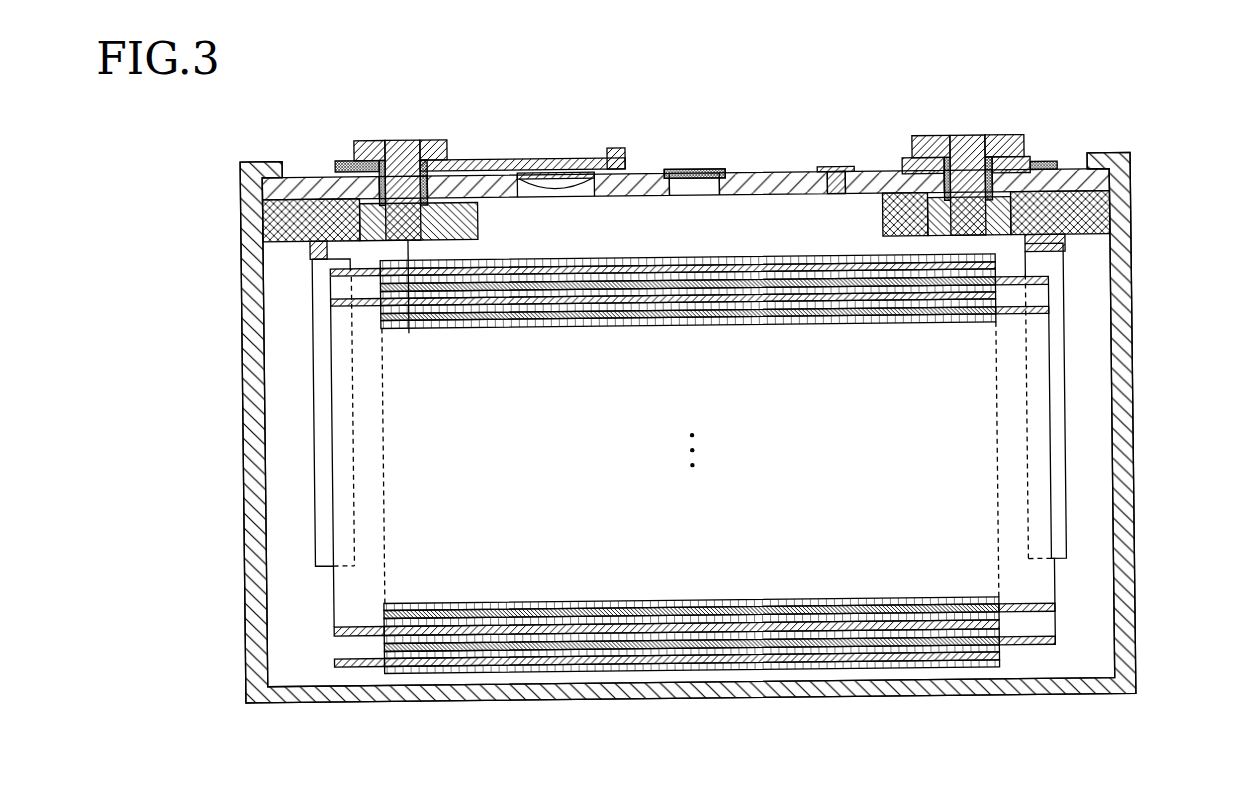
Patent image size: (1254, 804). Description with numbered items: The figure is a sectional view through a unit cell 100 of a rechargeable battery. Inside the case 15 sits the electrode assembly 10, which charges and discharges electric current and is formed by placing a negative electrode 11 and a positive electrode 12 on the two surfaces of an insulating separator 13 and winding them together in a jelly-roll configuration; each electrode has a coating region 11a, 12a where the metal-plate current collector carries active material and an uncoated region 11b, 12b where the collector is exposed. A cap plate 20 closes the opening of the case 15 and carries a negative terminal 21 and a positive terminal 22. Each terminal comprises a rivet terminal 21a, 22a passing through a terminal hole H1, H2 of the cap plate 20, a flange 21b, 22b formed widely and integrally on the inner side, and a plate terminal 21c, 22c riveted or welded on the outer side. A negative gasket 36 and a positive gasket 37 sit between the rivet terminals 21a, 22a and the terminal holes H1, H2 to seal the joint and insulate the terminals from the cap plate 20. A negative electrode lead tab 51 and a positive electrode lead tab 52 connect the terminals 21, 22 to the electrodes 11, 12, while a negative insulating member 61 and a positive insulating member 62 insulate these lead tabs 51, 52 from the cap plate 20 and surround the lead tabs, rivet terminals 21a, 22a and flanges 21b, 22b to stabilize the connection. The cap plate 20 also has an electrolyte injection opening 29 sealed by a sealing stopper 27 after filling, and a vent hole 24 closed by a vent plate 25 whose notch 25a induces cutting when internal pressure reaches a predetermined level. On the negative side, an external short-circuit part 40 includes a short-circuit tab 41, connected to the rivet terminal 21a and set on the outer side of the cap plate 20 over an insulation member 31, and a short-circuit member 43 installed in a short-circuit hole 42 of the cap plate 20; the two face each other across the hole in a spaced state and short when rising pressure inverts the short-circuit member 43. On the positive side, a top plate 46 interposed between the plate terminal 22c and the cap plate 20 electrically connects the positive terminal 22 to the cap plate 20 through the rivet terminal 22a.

The unit cell 100 is at (720, 80).
The electrode assembly 10 is at (798, 742).
The case 15 is at (1134, 352).
The cap plate 20 is at (770, 180).
The negative terminal 21 is at (416, 234).
The rivet terminal 21a is at (440, 395).
The flange 21b is at (448, 168).
The plate terminal 21c is at (432, 140).
The positive terminal 22 is at (1006, 169).
The rivet terminal 22a is at (1156, 268).
The flange 22b is at (900, 225).
The plate terminal 22c is at (1015, 145).
The vent hole 24 is at (700, 193).
The vent plate 25 is at (722, 176).
The notch 25a is at (690, 176).
The sealing stopper 27 is at (842, 180).
The electrolyte injection opening 29 is at (817, 110).
The insulation member 31 is at (612, 156).
The negative gasket 36 is at (340, 165).
The positive gasket 37 is at (925, 163).
The external short-circuit part 40 is at (555, 159).
The short-circuit tab 41 is at (512, 164).
The short-circuit hole 42 is at (590, 185).
The short-circuit member 43 is at (555, 200).
The top plate 46 is at (1040, 168).
The negative electrode lead tab 51 is at (232, 385).
The positive electrode lead tab 52 is at (1150, 520).
The negative insulating member 61 is at (300, 220).
The positive insulating member 62 is at (1090, 220).
The negative electrode 11 is at (665, 513).
The coating region 11a is at (480, 640).
The uncoated region 11b is at (357, 503).
The positive electrode 12 is at (729, 520).
The coating region 12a is at (920, 655).
The uncoated region 12b is at (1026, 503).
The separator 13 is at (710, 670).
The terminal hole H1 is at (385, 160).
The terminal hole H2 is at (990, 150).